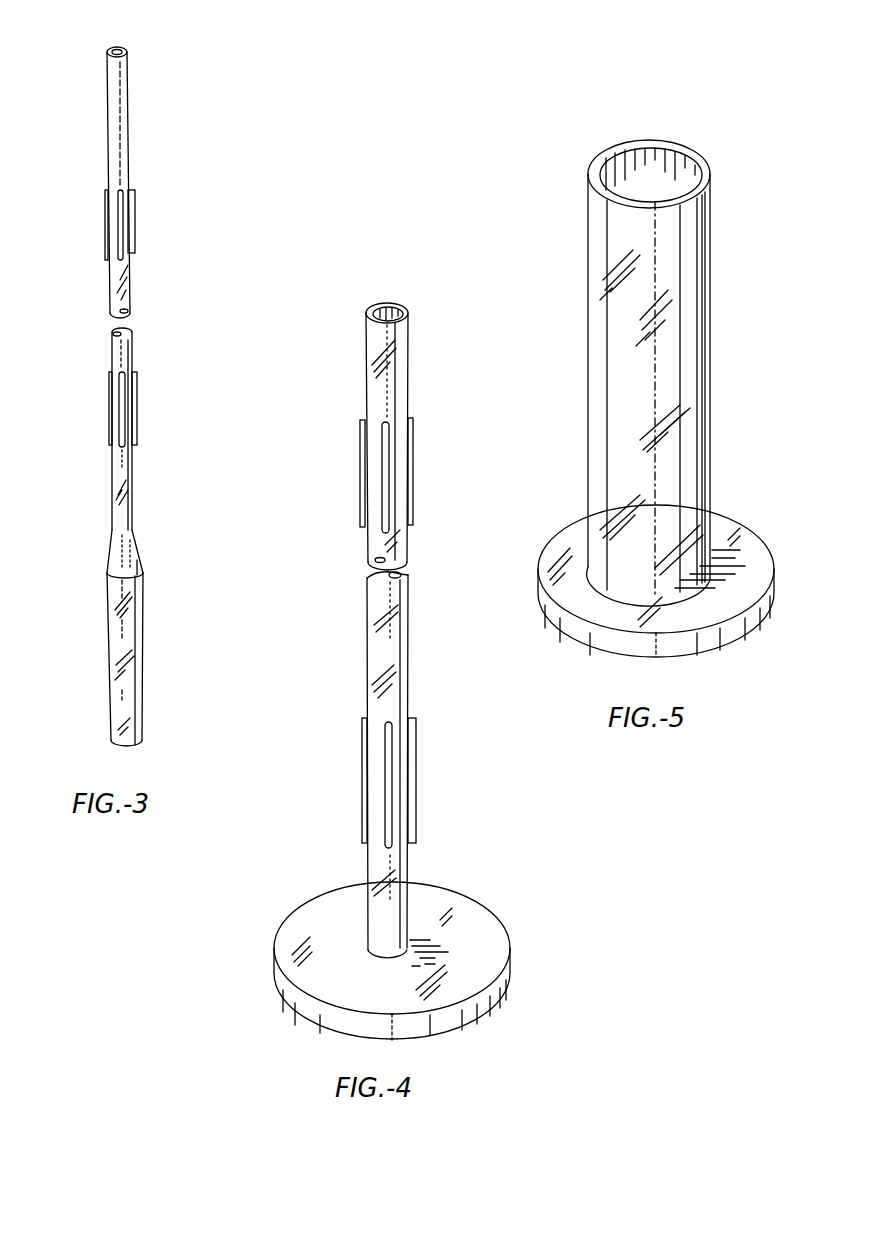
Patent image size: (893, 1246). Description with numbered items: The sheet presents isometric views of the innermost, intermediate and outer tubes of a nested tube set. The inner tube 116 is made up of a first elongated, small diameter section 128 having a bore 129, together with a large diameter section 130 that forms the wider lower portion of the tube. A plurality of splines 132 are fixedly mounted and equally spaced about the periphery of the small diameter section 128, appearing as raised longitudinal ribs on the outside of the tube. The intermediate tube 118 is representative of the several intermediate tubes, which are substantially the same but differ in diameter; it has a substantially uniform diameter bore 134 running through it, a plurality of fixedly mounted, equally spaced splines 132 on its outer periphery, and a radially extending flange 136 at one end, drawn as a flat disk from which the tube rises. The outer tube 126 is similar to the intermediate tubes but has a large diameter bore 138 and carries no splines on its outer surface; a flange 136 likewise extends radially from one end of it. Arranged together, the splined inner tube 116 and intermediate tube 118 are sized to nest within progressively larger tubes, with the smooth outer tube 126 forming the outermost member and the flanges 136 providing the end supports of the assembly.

In FIG. 3, the inner tube 116 is at (140, 507).
In FIG. 4, the intermediate tube 118 is at (362, 650).
In FIG. 5, the outer tube 126 is at (588, 262).
In FIG. 3, the first elongated small diameter section 128 is at (107, 140).
In FIG. 3, the bore 129 is at (124, 51).
In FIG. 3, the large diameter section 130 is at (122, 630).
In FIG. 3, the splines 132 is at (105, 236).
In FIG. 4, the splines 132 is at (360, 464).
In FIG. 4, the bore 134 is at (396, 306).
In FIG. 4, the flange 136 is at (338, 910).
In FIG. 5, the flange 136 is at (580, 535).
In FIG. 5, the large diameter bore 138 is at (680, 158).